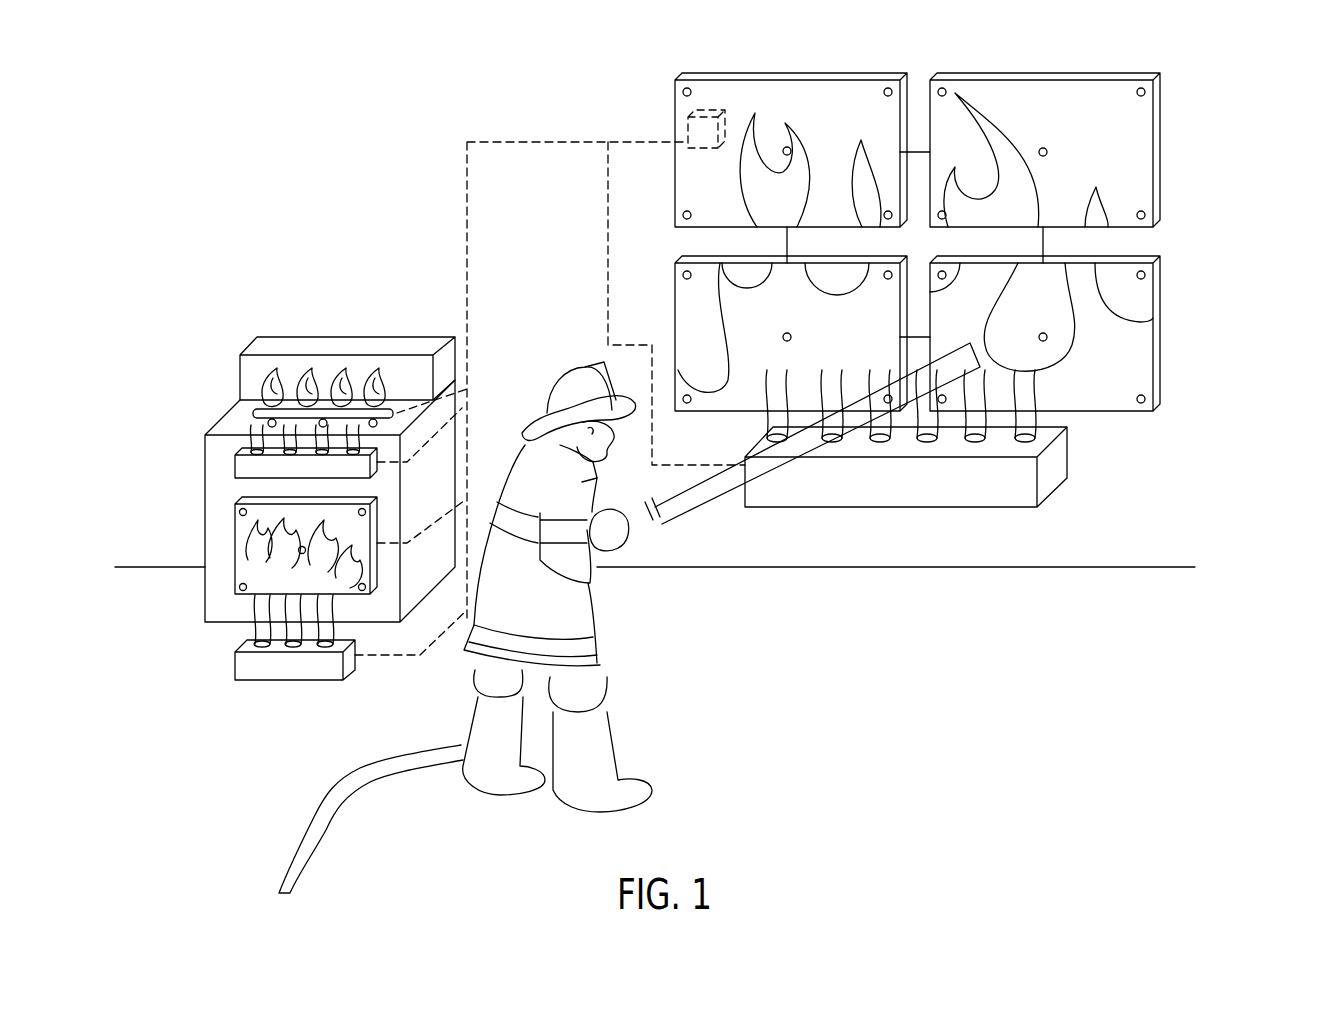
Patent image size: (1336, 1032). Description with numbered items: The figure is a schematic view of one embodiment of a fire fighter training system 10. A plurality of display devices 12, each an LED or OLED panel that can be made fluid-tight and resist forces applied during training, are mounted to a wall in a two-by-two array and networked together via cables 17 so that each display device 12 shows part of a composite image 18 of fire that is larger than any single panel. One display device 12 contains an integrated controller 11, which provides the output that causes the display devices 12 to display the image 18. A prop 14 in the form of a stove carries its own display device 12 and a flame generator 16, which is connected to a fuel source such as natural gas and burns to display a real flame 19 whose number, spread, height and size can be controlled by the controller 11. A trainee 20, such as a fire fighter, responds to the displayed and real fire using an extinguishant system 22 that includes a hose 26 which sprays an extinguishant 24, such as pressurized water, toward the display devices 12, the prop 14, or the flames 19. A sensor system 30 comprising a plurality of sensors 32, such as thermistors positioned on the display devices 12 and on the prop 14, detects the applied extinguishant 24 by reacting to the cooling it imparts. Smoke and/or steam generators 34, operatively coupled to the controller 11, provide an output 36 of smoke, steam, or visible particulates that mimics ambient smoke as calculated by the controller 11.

The training system 10 is at (1225, 152).
The controller 11 is at (688, 128).
The display device 12 is at (786, 112).
The prop 14 is at (198, 602).
The flame generator 16 is at (245, 406).
The cable 17 is at (915, 152).
The image 18 is at (1115, 315).
The flame 19 is at (272, 380).
The trainee 20 is at (588, 617).
The extinguishant system 22 is at (592, 618).
The extinguishant 24 is at (710, 497).
The hose 26 is at (378, 770).
The sensor system 30 is at (1130, 165).
The sensor 32 is at (687, 88).
The smoke and/or steam generator 34 is at (990, 495).
The output 36 is at (1040, 395).